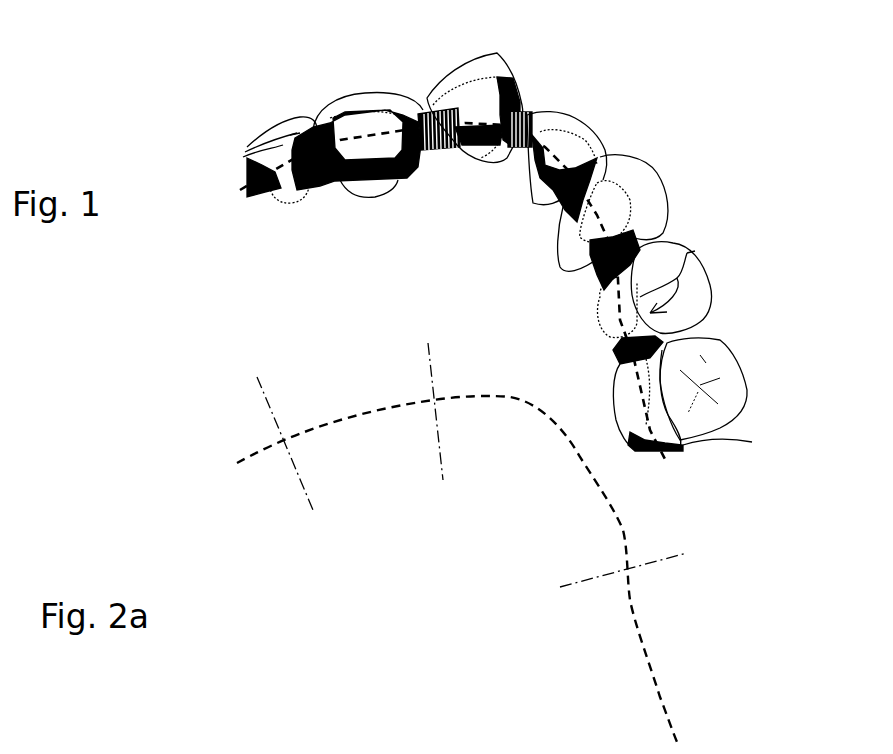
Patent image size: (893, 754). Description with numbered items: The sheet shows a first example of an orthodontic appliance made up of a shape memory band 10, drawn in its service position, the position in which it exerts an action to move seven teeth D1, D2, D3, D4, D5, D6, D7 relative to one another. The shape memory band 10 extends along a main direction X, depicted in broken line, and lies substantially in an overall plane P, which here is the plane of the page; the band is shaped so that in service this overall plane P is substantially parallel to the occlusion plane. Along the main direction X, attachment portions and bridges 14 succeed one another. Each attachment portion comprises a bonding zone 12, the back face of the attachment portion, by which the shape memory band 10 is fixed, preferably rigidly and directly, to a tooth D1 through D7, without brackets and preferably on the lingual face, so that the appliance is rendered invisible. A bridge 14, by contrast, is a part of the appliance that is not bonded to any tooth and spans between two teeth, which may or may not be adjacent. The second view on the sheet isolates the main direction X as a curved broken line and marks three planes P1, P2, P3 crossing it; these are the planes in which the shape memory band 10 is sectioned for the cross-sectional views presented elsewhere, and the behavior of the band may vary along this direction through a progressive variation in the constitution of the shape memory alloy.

In FIG. 1, the shape memory band 10 is at (687, 253).
In FIG. 1, the bonding zone 12 is at (270, 150).
In FIG. 1, the bridge 14 is at (298, 133).
In FIG. 1, the tooth D1 is at (283, 118).
In FIG. 1, the tooth D2 is at (343, 100).
In FIG. 1, the tooth D3 is at (463, 68).
In FIG. 1, the tooth D4 is at (563, 131).
In FIG. 1, the tooth D5 is at (630, 163).
In FIG. 1, the tooth D6 is at (677, 255).
In FIG. 1, the tooth D7 is at (737, 376).
In FIG. 1, the main direction X is at (237, 190).
In FIG. 2A, the main direction X is at (257, 447).
In FIG. 1, the overall plane P is at (750, 17).
In FIG. 2A, the first section plane P1 is at (277, 422).
In FIG. 2A, the second section plane P2 is at (427, 393).
In FIG. 2A, the third section plane P3 is at (640, 559).